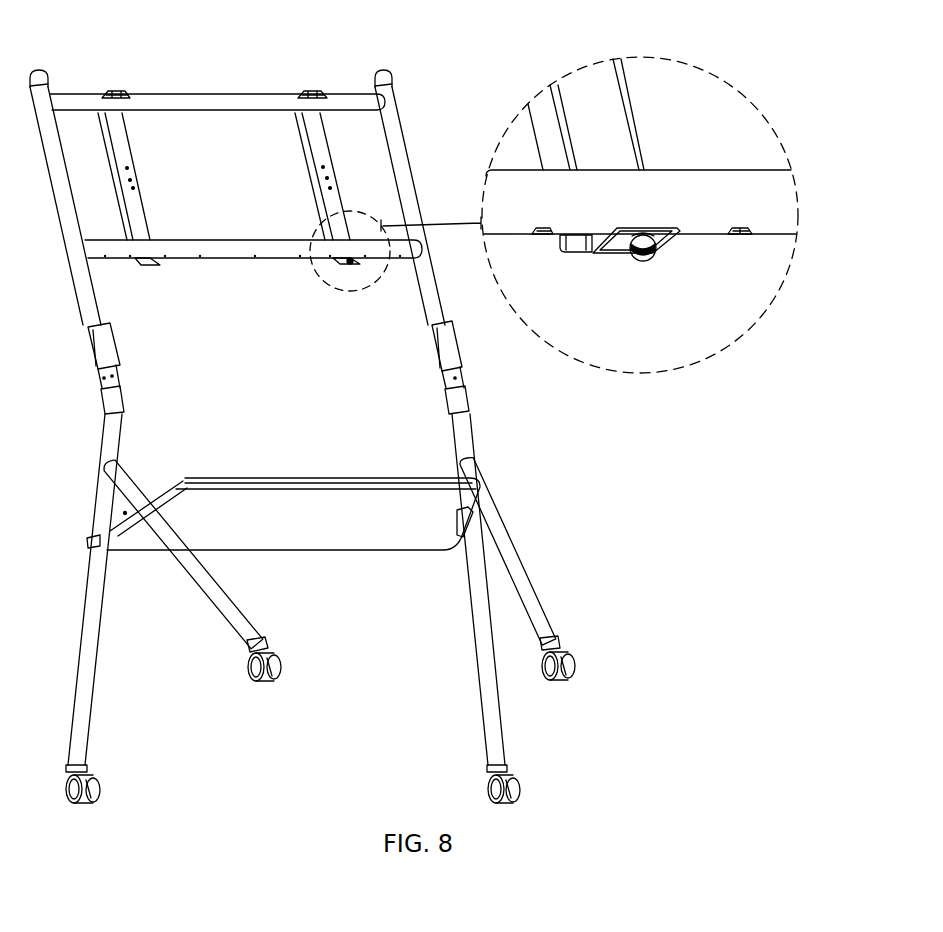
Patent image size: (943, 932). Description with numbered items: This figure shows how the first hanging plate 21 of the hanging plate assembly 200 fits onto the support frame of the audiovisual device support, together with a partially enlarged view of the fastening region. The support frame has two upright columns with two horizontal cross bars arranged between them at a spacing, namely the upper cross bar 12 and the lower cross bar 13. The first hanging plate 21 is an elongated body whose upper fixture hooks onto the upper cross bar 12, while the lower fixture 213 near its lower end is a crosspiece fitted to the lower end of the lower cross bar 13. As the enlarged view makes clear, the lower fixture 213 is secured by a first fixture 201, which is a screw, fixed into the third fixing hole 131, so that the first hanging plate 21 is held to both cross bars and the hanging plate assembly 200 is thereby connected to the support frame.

The upper cross bar 12 is at (203, 100).
The lower cross bar 13 is at (258, 248).
The first hanging plate 21 is at (613, 113).
The third fixing hole 131 is at (742, 236).
The hanging plate assembly 200 is at (312, 93).
The first fixture 201 is at (645, 260).
The lower fixture 213 is at (617, 245).